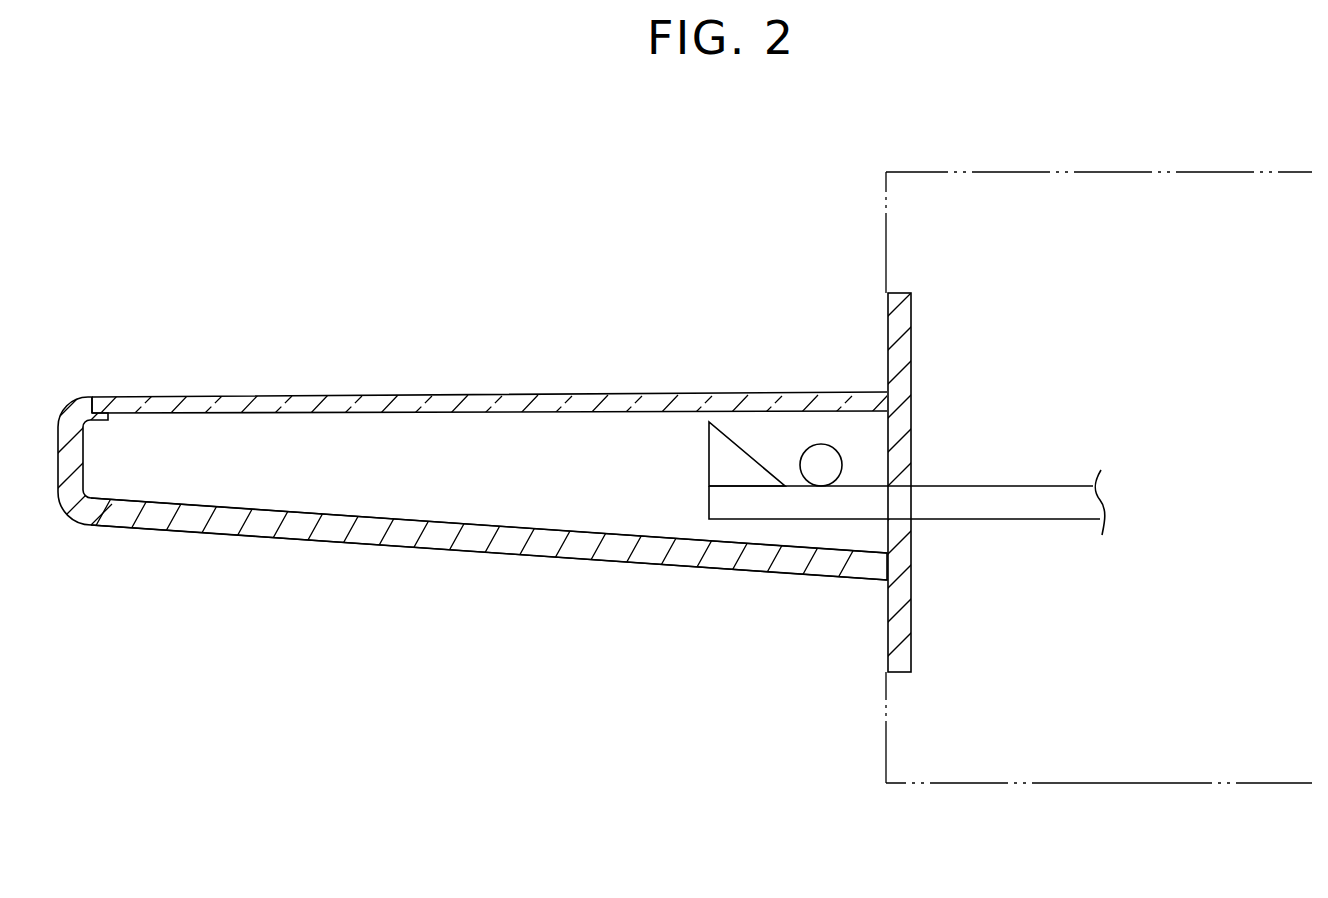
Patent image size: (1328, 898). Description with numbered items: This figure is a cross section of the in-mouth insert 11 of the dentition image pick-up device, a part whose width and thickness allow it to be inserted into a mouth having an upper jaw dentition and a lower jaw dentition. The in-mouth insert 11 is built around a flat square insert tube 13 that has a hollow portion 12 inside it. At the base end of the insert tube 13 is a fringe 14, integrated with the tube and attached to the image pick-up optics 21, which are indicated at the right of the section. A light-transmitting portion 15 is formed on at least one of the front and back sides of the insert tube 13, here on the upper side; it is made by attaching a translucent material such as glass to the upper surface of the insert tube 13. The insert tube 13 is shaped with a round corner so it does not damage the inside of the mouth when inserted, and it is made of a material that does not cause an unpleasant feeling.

The in-mouth insert 11 is at (143, 527).
The hollow portion 12 is at (340, 493).
The insert tube 13 is at (510, 543).
The fringe 14 is at (888, 622).
The light-transmitting portion 15 is at (487, 396).
The image pick-up optics 21 is at (1045, 783).